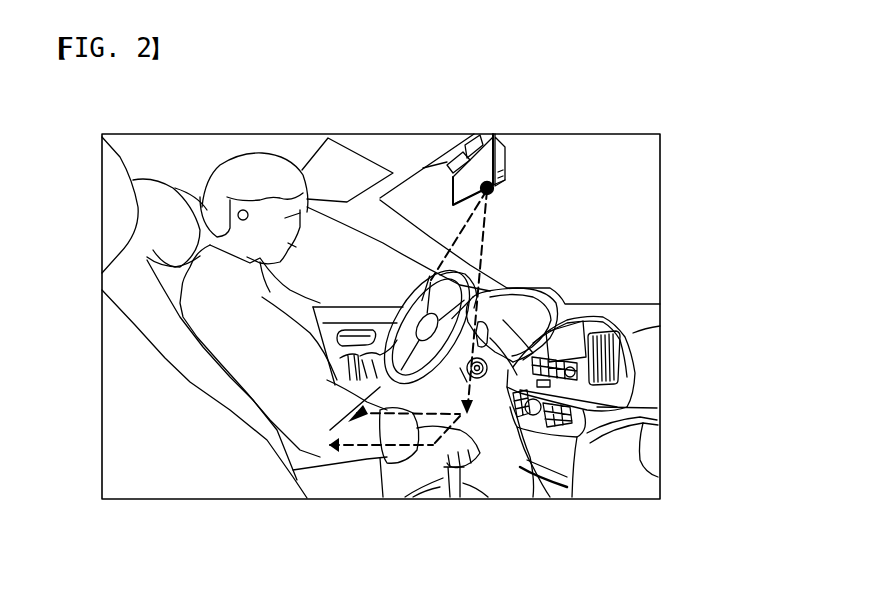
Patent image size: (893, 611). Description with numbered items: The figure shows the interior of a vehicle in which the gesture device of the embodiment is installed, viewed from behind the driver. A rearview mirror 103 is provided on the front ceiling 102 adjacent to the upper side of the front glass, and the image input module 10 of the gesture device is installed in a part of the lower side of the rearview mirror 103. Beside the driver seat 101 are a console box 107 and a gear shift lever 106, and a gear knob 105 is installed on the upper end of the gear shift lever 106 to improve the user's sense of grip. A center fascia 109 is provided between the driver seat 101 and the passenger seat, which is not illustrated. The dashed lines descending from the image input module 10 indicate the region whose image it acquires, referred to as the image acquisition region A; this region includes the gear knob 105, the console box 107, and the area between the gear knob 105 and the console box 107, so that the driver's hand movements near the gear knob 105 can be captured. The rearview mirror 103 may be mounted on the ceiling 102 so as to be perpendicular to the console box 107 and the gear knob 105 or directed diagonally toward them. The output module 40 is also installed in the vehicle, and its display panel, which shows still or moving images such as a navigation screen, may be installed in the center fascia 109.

The image input module 10 is at (492, 192).
The output module 40 is at (617, 317).
The driver seat 101 is at (165, 321).
The front ceiling 102 is at (393, 155).
The rearview mirror 103 is at (509, 142).
The gear knob 105 is at (436, 485).
The gear shift lever 106 is at (470, 500).
The console box 107 is at (340, 483).
The center fascia 109 is at (575, 443).
The image acquisition region A is at (368, 452).